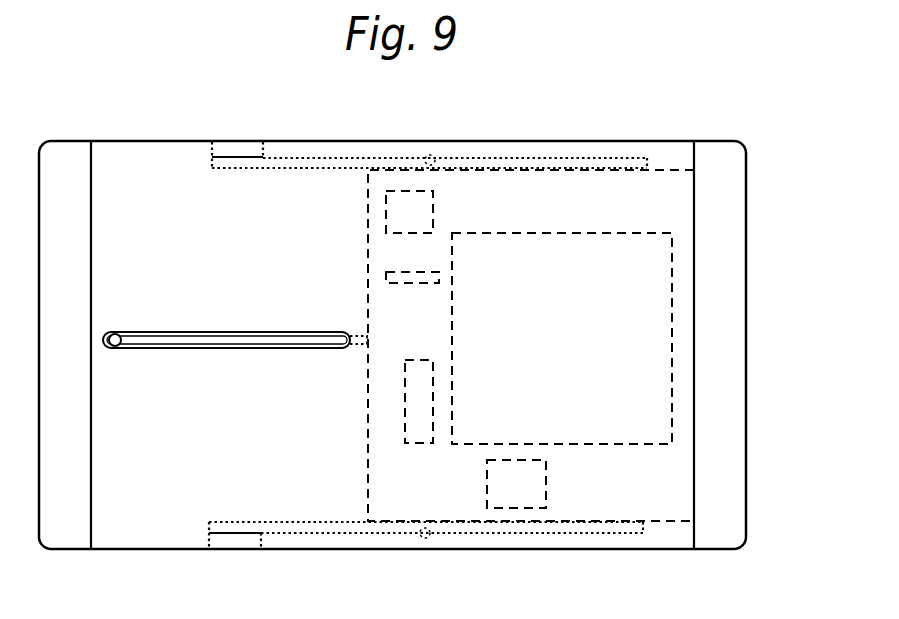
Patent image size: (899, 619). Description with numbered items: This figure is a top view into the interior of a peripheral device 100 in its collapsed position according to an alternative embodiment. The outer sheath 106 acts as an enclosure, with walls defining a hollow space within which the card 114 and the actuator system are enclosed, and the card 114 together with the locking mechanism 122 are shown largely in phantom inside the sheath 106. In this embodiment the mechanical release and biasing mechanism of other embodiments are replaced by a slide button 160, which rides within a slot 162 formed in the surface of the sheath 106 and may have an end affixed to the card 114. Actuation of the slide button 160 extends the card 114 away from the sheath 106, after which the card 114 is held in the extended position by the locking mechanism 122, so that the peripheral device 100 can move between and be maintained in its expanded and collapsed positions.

The peripheral device 100 is at (796, 111).
The outer sheath 106 is at (135, 155).
The card 114 is at (585, 208).
The locking mechanism 122 is at (303, 157).
The slide button 160 is at (116, 331).
The slot 162 is at (240, 332).